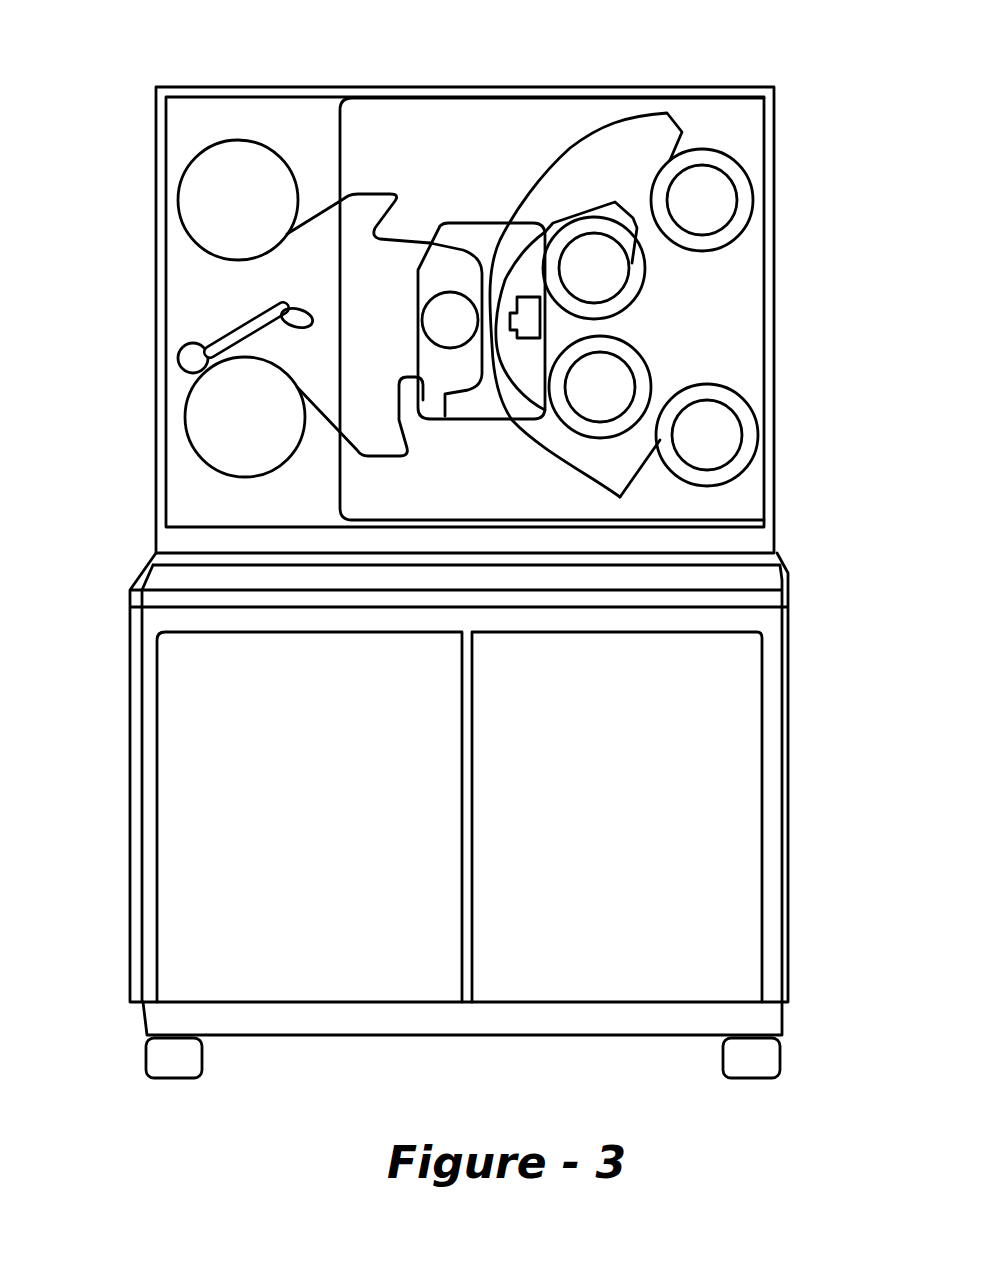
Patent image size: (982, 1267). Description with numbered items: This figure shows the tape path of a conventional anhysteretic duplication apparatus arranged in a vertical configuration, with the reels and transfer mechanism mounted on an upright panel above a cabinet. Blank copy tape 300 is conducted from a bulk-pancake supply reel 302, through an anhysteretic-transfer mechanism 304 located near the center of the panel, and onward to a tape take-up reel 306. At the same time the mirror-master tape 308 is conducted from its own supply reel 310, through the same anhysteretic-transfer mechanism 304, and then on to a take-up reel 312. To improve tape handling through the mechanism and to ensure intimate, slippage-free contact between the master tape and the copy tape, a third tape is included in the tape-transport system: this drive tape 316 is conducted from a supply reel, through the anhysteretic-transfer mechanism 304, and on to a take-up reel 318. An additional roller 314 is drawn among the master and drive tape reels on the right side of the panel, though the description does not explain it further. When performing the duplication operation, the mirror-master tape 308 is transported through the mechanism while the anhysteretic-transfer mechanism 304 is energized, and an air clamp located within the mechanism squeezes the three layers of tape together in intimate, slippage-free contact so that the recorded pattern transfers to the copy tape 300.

The blank copy tape 300 is at (373, 188).
The bulk-pancake supply reel 302 is at (193, 211).
The anhysteretic-transfer mechanism 304 is at (442, 308).
The tape take-up reel 306 is at (197, 415).
The mirror-master tape 308 is at (602, 127).
The supply reel 310 is at (720, 185).
The take-up reel 312 is at (730, 437).
The roller 314 is at (643, 248).
The drive tape 316 is at (625, 280).
The take-up reel 318 is at (650, 378).